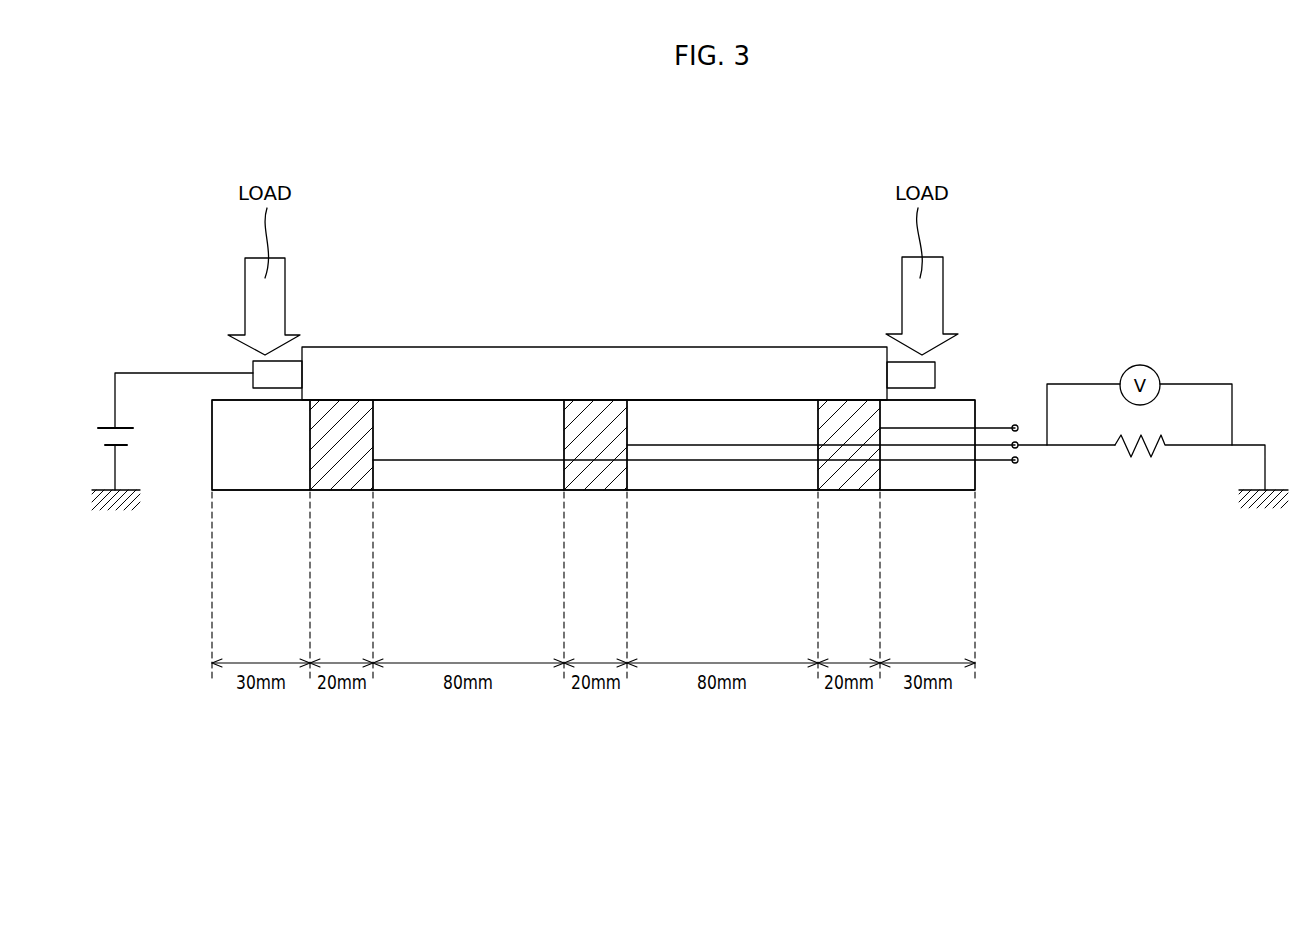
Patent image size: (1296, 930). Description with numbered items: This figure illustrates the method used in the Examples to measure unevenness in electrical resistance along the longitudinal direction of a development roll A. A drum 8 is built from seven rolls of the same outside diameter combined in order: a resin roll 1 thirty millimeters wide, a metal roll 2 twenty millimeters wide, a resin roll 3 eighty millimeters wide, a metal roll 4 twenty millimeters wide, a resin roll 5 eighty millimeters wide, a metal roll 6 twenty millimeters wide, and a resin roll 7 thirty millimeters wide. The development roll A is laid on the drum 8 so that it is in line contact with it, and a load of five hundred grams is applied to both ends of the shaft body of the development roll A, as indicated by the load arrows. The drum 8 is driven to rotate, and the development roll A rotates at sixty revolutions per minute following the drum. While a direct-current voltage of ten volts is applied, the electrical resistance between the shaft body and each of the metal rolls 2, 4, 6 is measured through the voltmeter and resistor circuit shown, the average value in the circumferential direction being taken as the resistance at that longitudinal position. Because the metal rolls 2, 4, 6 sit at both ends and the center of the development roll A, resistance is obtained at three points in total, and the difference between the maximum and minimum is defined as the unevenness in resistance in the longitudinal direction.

The development roll A is at (597, 347).
The resin roll 1 is at (262, 492).
The metal roll 2 is at (345, 492).
The resin roll 3 is at (468, 492).
The metal roll 4 is at (594, 492).
The resin roll 5 is at (720, 492).
The metal roll 6 is at (846, 492).
The resin roll 7 is at (928, 492).
The drum 8 is at (208, 495).